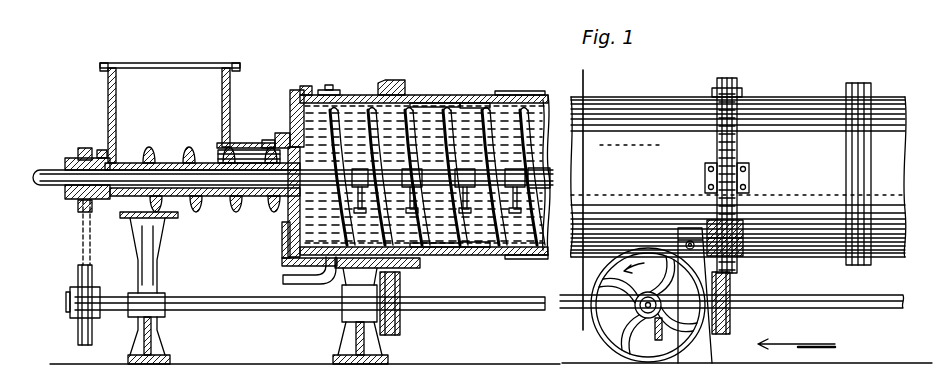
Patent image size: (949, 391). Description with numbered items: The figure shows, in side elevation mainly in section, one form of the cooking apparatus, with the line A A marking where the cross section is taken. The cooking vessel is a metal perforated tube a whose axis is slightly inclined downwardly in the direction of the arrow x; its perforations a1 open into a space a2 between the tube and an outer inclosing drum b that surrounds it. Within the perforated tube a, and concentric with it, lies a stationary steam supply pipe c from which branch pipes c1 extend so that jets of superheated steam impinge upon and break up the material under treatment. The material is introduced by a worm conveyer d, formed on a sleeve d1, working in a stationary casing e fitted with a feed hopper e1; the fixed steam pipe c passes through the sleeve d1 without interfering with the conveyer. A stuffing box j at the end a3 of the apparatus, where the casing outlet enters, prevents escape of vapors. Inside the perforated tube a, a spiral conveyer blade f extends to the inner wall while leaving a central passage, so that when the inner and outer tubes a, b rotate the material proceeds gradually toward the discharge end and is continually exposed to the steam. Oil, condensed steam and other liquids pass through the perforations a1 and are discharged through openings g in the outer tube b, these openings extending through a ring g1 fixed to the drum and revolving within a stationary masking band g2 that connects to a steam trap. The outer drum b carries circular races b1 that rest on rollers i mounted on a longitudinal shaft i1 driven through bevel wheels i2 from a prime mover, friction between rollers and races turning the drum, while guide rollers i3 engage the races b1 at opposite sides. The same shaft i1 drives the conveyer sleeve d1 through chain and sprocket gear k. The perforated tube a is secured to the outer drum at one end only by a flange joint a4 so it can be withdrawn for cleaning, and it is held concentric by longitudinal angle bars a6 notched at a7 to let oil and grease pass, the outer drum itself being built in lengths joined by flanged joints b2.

The section line A is at (588, 211).
The perforated tube a is at (536, 100).
The perforations a1 is at (536, 126).
The space a2 is at (508, 95).
The end of the apparatus a3 is at (290, 108).
The flange joint a4 is at (307, 80).
The longitudinal angle bars a6 is at (428, 103).
The notches a7 is at (480, 102).
The outer inclosing drum b is at (444, 100).
The circular races b1 is at (395, 80).
The flanged joints b2 is at (863, 72).
The steam supply pipe c is at (42, 170).
The branch pipes c1 is at (541, 190).
The worm conveyer d is at (145, 162).
The sleeve d1 is at (168, 162).
The stationary casing e is at (118, 210).
The feed hopper e1 is at (163, 68).
The spiral conveyer blade f is at (526, 252).
The openings g is at (288, 232).
The ring g1 is at (335, 92).
The masking band g2 is at (310, 279).
The rollers i is at (402, 330).
The longitudinal shaft i1 is at (192, 305).
The bevel wheels i2 is at (663, 318).
The guide rollers i3 is at (722, 235).
The stuffing box j is at (282, 134).
The chain and sprocket gear k is at (84, 272).
The arrow x is at (796, 345).